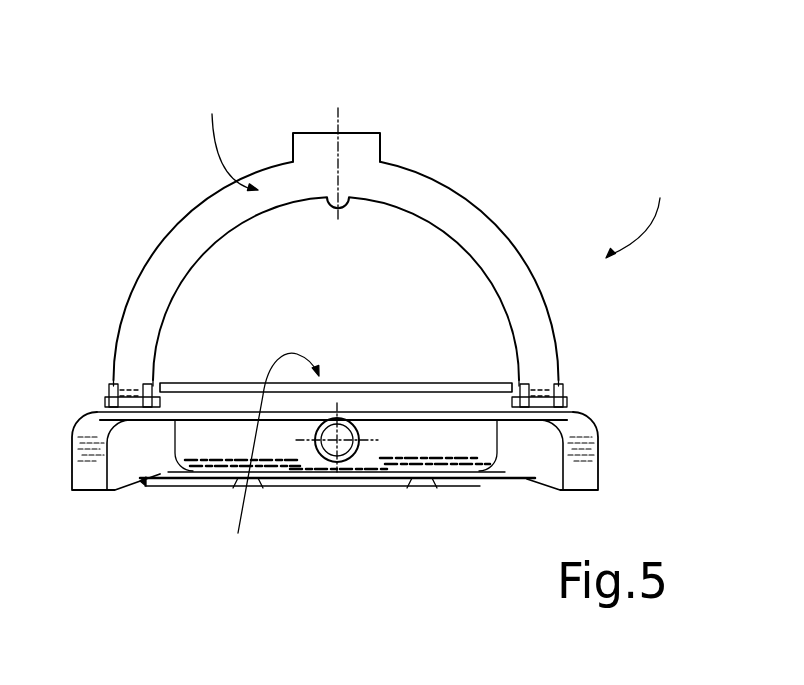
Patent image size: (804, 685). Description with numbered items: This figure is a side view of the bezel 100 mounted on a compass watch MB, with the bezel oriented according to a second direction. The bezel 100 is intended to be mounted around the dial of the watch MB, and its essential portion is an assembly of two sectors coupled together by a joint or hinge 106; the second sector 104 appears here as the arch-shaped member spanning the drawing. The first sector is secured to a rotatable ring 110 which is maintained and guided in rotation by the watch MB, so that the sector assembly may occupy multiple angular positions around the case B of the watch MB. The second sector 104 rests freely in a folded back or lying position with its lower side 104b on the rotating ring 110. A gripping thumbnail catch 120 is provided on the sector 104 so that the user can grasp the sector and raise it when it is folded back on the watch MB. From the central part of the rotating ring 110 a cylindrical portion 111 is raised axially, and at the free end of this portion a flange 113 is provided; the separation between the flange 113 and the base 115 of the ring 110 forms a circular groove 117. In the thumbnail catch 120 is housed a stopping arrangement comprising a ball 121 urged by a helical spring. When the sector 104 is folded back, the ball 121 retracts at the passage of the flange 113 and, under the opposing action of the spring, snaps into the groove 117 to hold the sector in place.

The bezel 100 is at (554, 331).
The second sector 104 is at (456, 204).
The lower side 104b is at (226, 139).
The joint or hinge 106 is at (580, 393).
The rotatable ring 110 is at (207, 413).
The cylindrical portion 111 is at (269, 462).
The flange 113 is at (423, 378).
The base 115 is at (299, 413).
The circular groove 117 is at (382, 397).
The gripping thumbnail catch 120 is at (362, 143).
The ball 121 is at (333, 192).
The compass watch MB is at (648, 215).
The case B is at (472, 440).